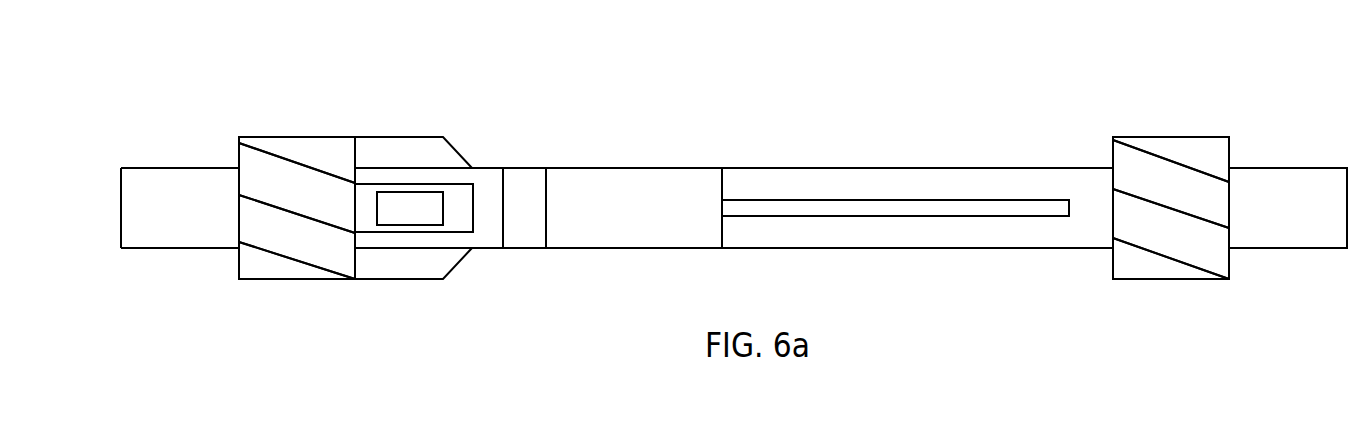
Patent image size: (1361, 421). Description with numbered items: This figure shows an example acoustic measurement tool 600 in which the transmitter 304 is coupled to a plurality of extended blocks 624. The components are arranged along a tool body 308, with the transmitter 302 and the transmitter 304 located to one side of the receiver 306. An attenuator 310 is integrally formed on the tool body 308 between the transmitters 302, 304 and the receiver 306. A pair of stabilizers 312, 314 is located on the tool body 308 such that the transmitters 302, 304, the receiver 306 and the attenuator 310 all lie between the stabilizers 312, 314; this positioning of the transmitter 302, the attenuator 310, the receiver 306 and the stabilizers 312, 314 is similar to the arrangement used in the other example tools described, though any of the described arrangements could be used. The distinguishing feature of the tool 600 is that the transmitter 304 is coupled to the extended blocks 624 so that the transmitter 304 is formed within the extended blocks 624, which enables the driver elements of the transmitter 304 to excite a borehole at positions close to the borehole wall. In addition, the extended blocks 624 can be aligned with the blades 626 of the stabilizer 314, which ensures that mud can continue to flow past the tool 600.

The acoustic measurement tool 600 is at (219, 40).
The transmitter 302 is at (523, 250).
The transmitter 304 is at (410, 225).
The receiver 306 is at (893, 198).
The tool body 308 is at (1257, 250).
The attenuator 310 is at (632, 167).
The stabilizer 312 is at (1172, 136).
The stabilizer 314 is at (298, 136).
The extended blocks 624 is at (415, 136).
The blades 626 is at (272, 272).